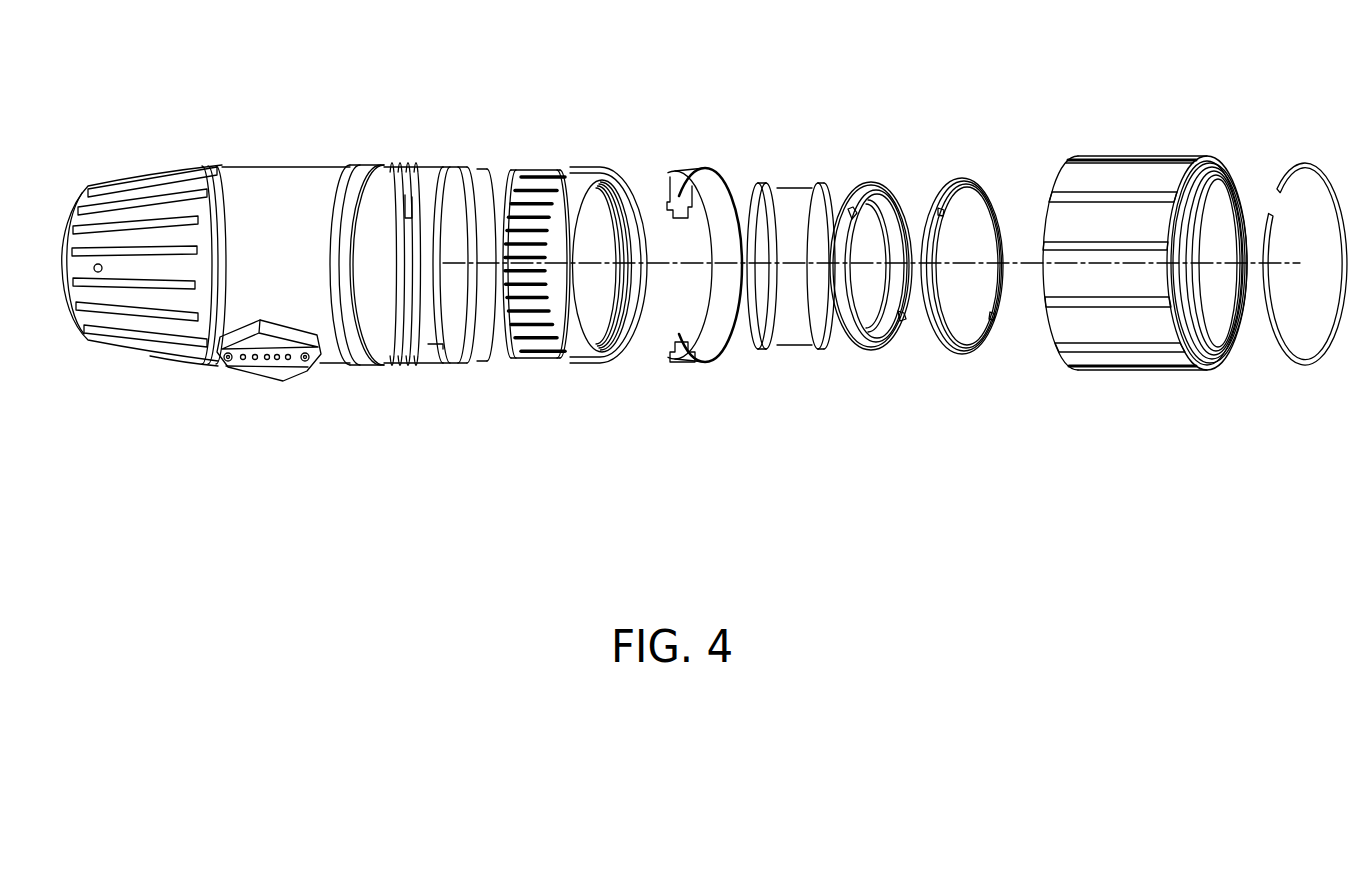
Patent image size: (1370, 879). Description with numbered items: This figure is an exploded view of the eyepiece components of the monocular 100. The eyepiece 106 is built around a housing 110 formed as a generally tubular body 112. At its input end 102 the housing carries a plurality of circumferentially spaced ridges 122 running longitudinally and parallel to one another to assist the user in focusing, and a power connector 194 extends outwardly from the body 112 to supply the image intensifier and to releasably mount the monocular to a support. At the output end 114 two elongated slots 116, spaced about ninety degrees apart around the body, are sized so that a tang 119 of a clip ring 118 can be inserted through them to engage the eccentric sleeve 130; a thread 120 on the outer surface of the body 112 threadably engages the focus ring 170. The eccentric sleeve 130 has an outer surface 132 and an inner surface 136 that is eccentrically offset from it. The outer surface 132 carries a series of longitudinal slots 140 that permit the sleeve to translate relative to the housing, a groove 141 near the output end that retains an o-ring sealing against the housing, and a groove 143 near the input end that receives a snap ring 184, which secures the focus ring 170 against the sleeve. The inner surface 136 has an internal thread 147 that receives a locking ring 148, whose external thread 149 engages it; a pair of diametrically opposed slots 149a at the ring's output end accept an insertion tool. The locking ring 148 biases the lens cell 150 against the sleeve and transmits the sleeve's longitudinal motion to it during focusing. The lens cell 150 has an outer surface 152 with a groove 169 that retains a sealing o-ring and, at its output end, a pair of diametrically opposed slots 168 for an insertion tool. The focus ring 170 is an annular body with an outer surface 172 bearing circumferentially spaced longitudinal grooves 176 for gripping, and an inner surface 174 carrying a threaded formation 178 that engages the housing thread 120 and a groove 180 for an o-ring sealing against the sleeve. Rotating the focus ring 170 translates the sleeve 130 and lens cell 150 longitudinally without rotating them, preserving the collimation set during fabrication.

The monocular 100 is at (1345, 85).
The input end 102 is at (75, 218).
The eyepiece 106 is at (1313, 462).
The housing 110 is at (272, 168).
The body 112 is at (305, 170).
The output end 114 is at (458, 170).
The slots 116 is at (428, 206).
The clip ring 118 is at (722, 350).
The tang 119 is at (678, 200).
The thread 120 is at (370, 365).
The ridges 122 is at (132, 174).
The eccentric sleeve 130 is at (572, 173).
The outer surface 132 is at (525, 178).
The inner surface 136 is at (612, 355).
The longitudinal slots 140 is at (545, 175).
The groove 141 is at (491, 177).
The groove 143 is at (580, 180).
The internal thread 147 is at (625, 282).
The locking ring 148 is at (958, 176).
The external thread 149 is at (938, 348).
The slots 149a is at (962, 208).
The lens cell 150 is at (855, 179).
The outer surface 152 is at (778, 186).
The slots 168 is at (842, 206).
The groove 169 is at (830, 350).
The focus ring 170 is at (1137, 153).
The outer surface 172 is at (1190, 160).
The inner surface 174 is at (1218, 350).
The grooves 176 is at (1085, 158).
The threaded formation 178 is at (1200, 227).
The groove 180 is at (1250, 357).
The snap ring 184 is at (1311, 163).
The power connector 194 is at (265, 378).